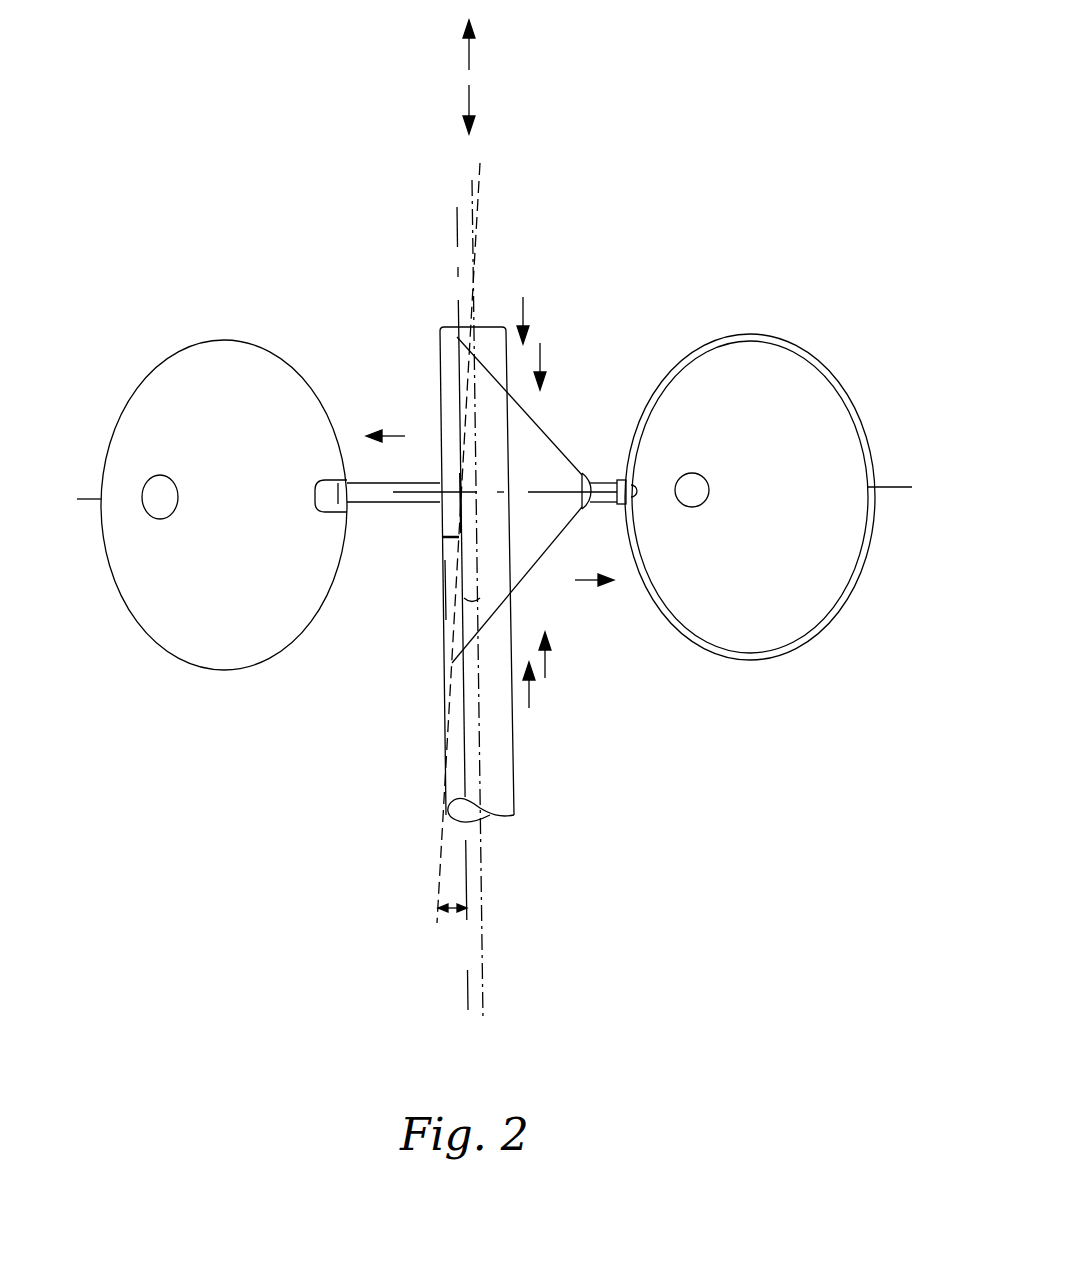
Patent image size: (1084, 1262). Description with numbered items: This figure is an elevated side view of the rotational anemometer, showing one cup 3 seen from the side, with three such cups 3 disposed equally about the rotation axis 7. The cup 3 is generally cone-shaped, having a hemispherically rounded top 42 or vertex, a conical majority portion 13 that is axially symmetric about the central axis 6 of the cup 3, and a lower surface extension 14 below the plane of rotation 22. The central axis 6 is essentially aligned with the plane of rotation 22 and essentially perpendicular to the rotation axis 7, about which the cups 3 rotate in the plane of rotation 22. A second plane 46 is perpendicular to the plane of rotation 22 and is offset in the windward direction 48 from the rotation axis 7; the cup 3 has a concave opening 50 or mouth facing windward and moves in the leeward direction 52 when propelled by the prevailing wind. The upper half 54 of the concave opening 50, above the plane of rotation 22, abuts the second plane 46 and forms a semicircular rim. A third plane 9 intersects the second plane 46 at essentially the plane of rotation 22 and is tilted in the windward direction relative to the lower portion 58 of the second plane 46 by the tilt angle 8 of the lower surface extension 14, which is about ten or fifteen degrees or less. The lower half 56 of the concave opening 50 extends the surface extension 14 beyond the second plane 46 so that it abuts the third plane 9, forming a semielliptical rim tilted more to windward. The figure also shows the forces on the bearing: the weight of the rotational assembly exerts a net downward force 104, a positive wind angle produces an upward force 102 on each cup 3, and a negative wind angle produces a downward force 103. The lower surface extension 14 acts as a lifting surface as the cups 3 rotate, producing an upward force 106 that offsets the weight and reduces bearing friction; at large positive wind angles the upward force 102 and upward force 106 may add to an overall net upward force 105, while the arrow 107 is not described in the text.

The cup 3 is at (224, 575).
The central axis 6 is at (505, 489).
The rotation axis 7 is at (484, 940).
The tilt angle 8 is at (455, 912).
The third plane 9 is at (440, 877).
The majority portion 13 is at (546, 537).
The lower surface extension 14 is at (467, 1000).
The plane of rotation 22 is at (88, 499).
The hemispherically rounded top 42 is at (583, 471).
The second plane 46 is at (457, 276).
The windward direction 48 is at (392, 431).
The concave opening 50 is at (462, 428).
The leeward direction 52 is at (575, 585).
The upper half 54 is at (462, 380).
The lower half 56 is at (452, 590).
The lower portion 58 is at (466, 598).
The upward force 102 is at (546, 670).
The downward force 103 is at (541, 358).
The net downward force 104 is at (470, 100).
The overall net upward force 105 is at (470, 55).
The upward force 106 is at (530, 695).
The downward force arrow 107 is at (524, 312).